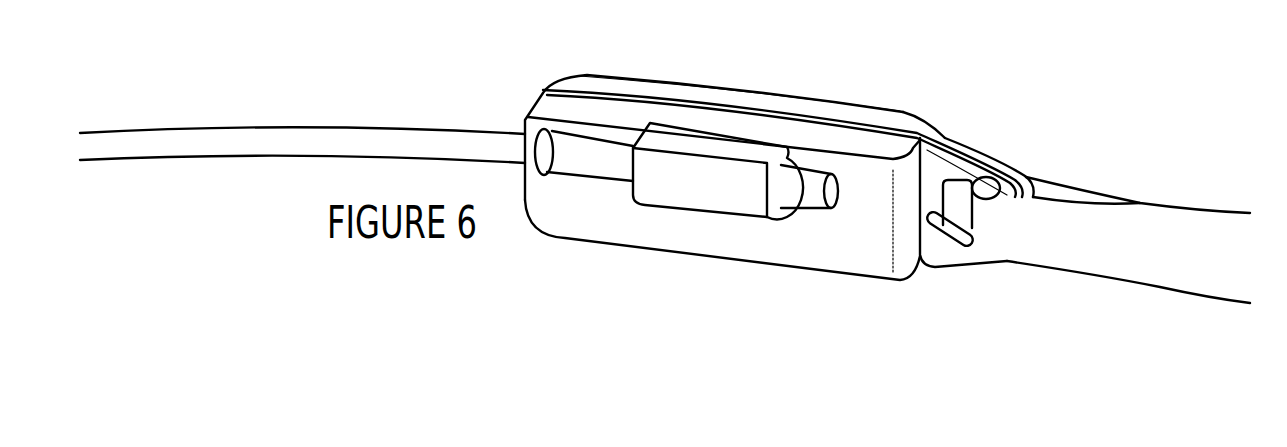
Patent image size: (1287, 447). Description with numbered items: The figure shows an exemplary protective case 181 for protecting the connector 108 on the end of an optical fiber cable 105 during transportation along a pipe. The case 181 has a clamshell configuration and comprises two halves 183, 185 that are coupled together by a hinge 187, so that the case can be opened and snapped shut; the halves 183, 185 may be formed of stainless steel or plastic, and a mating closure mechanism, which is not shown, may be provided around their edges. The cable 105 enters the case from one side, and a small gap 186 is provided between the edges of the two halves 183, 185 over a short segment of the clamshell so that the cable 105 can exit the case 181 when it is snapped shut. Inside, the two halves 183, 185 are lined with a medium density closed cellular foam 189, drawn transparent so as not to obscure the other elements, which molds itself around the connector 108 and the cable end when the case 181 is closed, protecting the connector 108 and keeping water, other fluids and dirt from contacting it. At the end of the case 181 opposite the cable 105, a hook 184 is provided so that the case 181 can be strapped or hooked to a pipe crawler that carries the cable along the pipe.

The cable 105 is at (283, 135).
The connector 108 is at (667, 192).
The protective case 181 is at (962, 124).
The first half 183 is at (747, 90).
The hook 184 is at (997, 172).
The second half 185 is at (778, 243).
The gap 186 is at (525, 137).
The hinge 187 is at (621, 87).
The closed cellular foam 189 is at (878, 202).